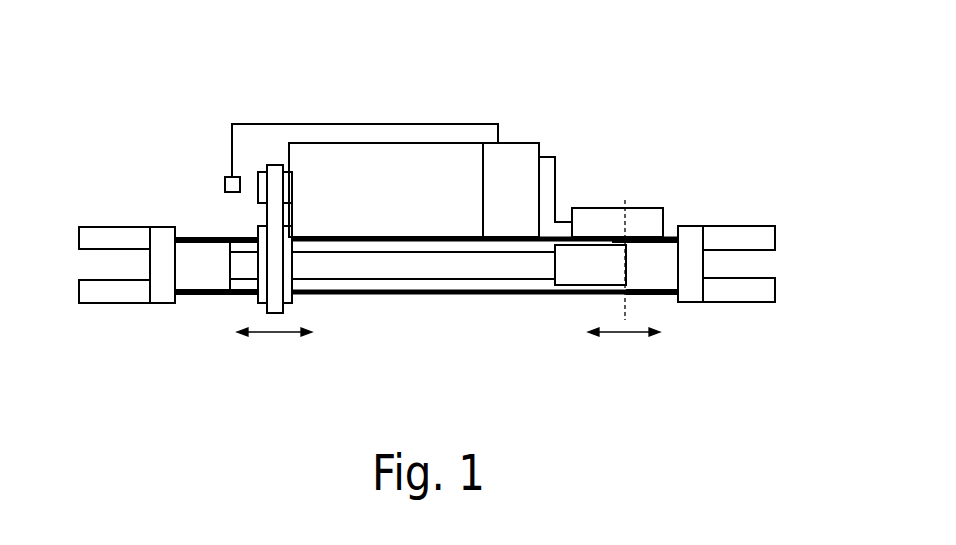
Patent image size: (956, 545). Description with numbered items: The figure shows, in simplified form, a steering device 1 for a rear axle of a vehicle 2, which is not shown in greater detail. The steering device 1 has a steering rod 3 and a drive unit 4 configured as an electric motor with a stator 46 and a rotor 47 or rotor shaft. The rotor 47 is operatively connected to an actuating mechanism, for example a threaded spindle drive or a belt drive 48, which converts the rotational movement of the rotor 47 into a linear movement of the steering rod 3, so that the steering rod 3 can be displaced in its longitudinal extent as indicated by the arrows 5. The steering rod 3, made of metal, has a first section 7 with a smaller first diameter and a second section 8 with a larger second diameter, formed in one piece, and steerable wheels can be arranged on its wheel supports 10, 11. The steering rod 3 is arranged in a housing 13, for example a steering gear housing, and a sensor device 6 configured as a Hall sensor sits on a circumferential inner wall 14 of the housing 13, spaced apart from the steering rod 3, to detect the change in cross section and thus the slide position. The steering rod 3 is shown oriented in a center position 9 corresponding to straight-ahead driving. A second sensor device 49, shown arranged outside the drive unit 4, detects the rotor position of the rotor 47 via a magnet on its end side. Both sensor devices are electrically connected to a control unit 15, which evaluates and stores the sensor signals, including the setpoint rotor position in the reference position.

The steering device 1 is at (580, 93).
The vehicle 2 is at (250, 92).
The steering rod 3 is at (497, 289).
The drive unit 4 is at (444, 142).
The arrows 5 is at (273, 333).
The sensor device 6 is at (611, 207).
The first section 7 is at (592, 272).
The second section 8 is at (667, 255).
The center position 9 is at (627, 300).
The wheel support 10 is at (120, 303).
The wheel support 11 is at (762, 303).
The housing 13 is at (265, 278).
The circumferential inner wall 14 is at (422, 291).
The control unit 15 is at (511, 142).
The stator 46 is at (328, 122).
The rotor 47 is at (252, 203).
The belt drive 48 is at (250, 305).
The second sensor device 49 is at (225, 183).